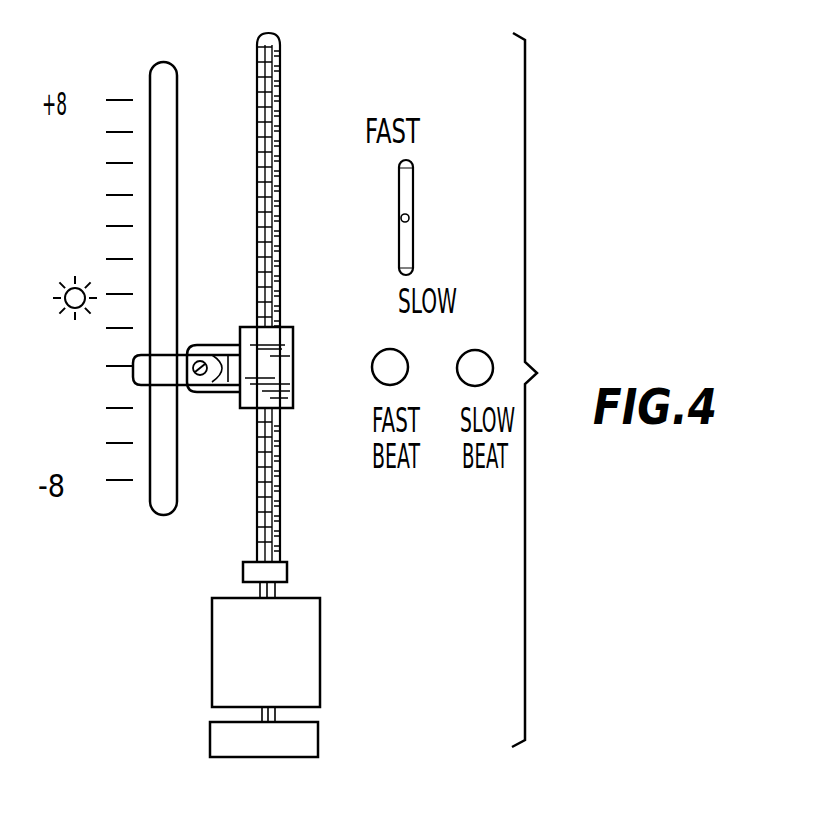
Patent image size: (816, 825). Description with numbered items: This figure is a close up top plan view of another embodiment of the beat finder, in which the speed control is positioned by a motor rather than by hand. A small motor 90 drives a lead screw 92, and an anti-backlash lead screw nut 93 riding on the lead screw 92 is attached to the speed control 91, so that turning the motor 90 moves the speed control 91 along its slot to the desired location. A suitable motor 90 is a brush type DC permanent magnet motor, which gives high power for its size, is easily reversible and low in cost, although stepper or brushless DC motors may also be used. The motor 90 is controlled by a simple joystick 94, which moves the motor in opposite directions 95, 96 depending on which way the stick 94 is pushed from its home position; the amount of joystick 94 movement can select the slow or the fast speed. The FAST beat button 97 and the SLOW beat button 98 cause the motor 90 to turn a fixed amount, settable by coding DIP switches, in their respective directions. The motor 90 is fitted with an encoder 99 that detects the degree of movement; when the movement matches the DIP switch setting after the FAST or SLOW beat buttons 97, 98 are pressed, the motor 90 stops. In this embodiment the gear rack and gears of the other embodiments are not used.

The motor 90 is at (320, 651).
The speed control 91 is at (167, 75).
The lead screw 92 is at (268, 70).
The anti-backlash lead screw nut 93 is at (287, 368).
The joystick 94 is at (410, 218).
The direction 95 is at (418, 172).
The direction 96 is at (442, 269).
The FAST beat button 97 is at (380, 356).
The SLOW beat button 98 is at (492, 345).
The encoder 99 is at (318, 742).